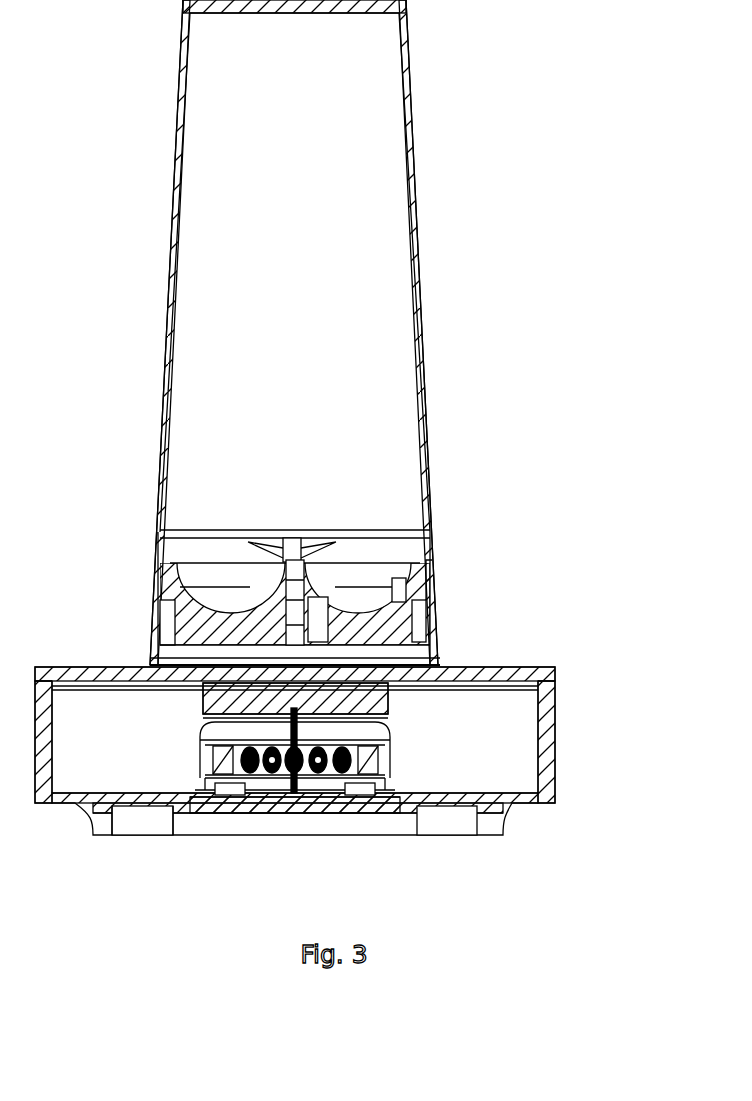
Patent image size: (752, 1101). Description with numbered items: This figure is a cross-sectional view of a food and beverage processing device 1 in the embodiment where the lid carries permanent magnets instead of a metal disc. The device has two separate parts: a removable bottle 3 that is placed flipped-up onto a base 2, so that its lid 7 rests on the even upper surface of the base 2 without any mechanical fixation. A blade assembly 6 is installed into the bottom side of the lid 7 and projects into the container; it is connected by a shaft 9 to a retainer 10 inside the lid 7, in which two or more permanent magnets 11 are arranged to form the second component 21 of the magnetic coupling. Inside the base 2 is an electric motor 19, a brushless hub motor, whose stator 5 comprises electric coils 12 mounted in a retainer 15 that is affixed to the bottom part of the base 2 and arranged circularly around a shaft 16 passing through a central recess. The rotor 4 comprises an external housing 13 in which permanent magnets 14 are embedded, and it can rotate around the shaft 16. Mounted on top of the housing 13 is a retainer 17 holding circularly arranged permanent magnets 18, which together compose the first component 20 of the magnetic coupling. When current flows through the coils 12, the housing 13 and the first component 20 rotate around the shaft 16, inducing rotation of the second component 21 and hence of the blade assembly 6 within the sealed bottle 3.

The food and beverage processing device 1 is at (463, 653).
The base 2 is at (556, 720).
The bottle 3 is at (423, 271).
The rotor 4 is at (390, 758).
The stator 5 is at (200, 778).
The blade assembly 6 is at (250, 546).
The lid 7 is at (180, 622).
The shaft 9 is at (330, 597).
The retainer 10 is at (400, 590).
The permanent magnets 11 is at (203, 684).
The electric coils 12 is at (243, 759).
The external housing 13 is at (208, 748).
The permanent magnets 14 is at (370, 775).
The retainer 15 is at (262, 780).
The shaft 16 is at (294, 794).
The retainer of the magnets 17 is at (384, 714).
The permanent magnets 18 is at (390, 702).
The electric motor 19 is at (190, 786).
The first component of the magnetic coupling 20 is at (370, 720).
The second component of the magnetic coupling 21 is at (430, 615).